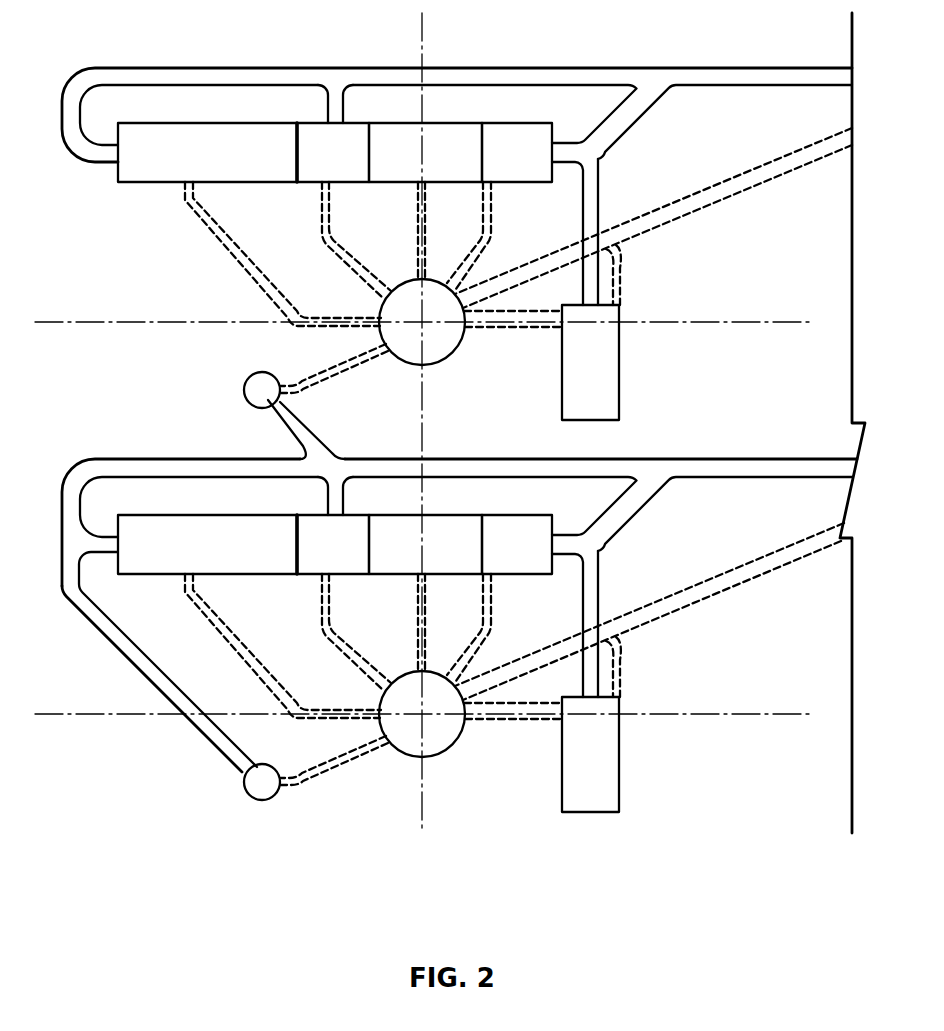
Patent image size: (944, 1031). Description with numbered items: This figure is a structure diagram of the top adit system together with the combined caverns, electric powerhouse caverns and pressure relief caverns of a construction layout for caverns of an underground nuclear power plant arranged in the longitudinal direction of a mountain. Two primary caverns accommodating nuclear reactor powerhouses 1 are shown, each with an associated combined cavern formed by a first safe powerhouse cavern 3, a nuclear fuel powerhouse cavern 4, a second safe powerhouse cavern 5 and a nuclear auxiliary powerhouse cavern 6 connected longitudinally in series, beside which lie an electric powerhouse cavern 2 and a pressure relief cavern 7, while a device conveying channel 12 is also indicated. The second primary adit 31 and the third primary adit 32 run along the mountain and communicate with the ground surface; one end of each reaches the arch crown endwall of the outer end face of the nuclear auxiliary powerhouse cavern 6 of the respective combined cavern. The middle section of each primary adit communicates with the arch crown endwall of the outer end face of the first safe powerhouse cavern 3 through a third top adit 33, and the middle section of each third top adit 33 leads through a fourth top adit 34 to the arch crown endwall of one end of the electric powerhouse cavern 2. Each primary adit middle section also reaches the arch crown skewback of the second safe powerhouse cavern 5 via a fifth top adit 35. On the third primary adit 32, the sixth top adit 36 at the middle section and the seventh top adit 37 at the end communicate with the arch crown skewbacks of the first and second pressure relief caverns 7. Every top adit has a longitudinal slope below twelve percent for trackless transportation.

The primary cavern accommodating nuclear reactor powerhouse 1 is at (438, 343).
The electric powerhouse cavern 2 is at (603, 365).
The first safe powerhouse cavern 3 is at (505, 172).
The nuclear fuel powerhouse cavern 4 is at (432, 172).
The second safe powerhouse cavern 5 is at (337, 172).
The nuclear auxiliary powerhouse cavern 6 is at (220, 172).
The pressure relief cavern 7 is at (265, 377).
The device conveying channel 12 is at (755, 177).
The second primary adit 31 is at (752, 75).
The third primary adit 32 is at (752, 467).
The third top adit of end part of combined cavern 33 is at (625, 123).
The fourth top adit of electric powerhouse cavern 34 is at (590, 185).
The fifth top adit of middle section of combined cavern 35 is at (335, 97).
The sixth top adit of first pressure relief cavern 36 is at (307, 431).
The seventh top adit of second pressure relief cavern 37 is at (162, 680).